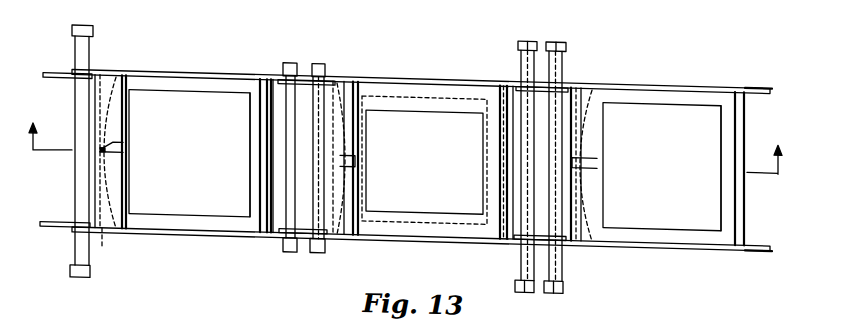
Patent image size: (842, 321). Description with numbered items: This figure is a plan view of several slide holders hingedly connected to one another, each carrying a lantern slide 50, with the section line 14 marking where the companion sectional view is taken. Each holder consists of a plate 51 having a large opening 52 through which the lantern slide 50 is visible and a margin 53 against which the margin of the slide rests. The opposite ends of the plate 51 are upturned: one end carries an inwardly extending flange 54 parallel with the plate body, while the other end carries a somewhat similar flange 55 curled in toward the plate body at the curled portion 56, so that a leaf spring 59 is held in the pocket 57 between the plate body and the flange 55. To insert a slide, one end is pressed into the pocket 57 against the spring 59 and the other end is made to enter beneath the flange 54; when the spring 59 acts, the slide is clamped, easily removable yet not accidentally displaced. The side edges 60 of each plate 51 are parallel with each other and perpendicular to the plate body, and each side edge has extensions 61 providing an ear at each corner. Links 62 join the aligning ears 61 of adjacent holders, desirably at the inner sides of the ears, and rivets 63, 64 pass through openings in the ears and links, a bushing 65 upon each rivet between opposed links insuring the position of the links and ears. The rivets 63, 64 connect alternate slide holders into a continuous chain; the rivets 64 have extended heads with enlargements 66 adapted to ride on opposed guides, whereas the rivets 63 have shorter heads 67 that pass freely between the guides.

The section line 14 is at (405, 139).
The lantern slide 50 is at (408, 219).
The plate 51 is at (180, 83).
The large opening 52 is at (425, 160).
The margin 53 is at (251, 106).
The inwardly extending flange 54 is at (268, 130).
The flange 55 is at (110, 172).
The curled portion 56 is at (123, 149).
The pocket 57 is at (102, 244).
The leaf spring 59 is at (110, 194).
The side edges 60 is at (469, 68).
The extensions 61 is at (335, 56).
The links 62 is at (67, 68).
The rivets 63 is at (333, 58).
The rivets 64 is at (517, 71).
The bushing 65 is at (80, 189).
The enlargements 66 is at (90, 28).
The shorter heads 67 is at (283, 57).